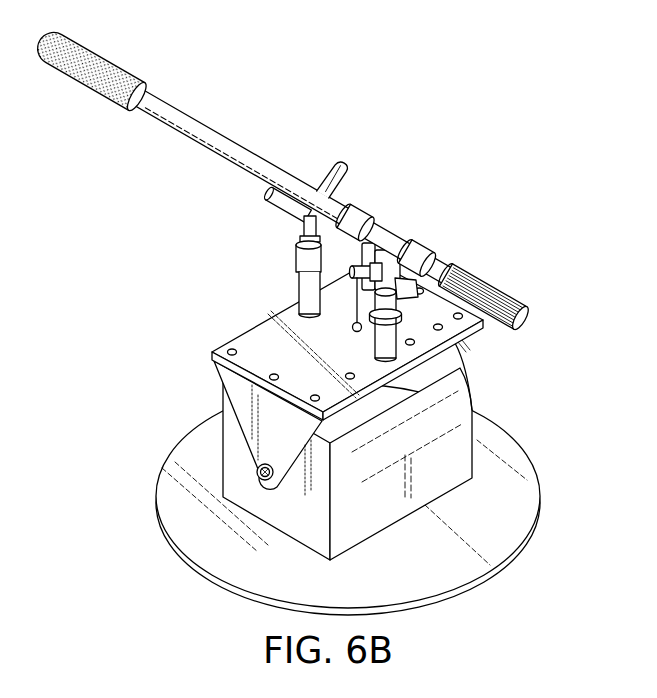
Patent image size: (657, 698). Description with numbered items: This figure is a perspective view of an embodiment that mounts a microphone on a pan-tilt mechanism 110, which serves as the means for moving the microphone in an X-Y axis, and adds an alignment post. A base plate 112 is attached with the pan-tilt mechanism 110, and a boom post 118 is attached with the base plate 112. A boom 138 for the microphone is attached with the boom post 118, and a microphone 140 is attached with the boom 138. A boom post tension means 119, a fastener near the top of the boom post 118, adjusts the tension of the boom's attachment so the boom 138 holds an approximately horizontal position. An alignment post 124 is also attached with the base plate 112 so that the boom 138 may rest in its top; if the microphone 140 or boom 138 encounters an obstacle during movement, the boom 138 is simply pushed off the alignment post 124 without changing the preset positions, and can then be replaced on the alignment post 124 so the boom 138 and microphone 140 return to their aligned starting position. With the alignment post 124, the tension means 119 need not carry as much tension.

The pan-tilt mechanism 110 is at (467, 393).
The base plate 112 is at (252, 338).
The boom post 118 is at (462, 350).
The boom post tension means 119 is at (381, 231).
The alignment post 124 is at (300, 283).
The boom 138 is at (233, 140).
The microphone 140 is at (83, 50).